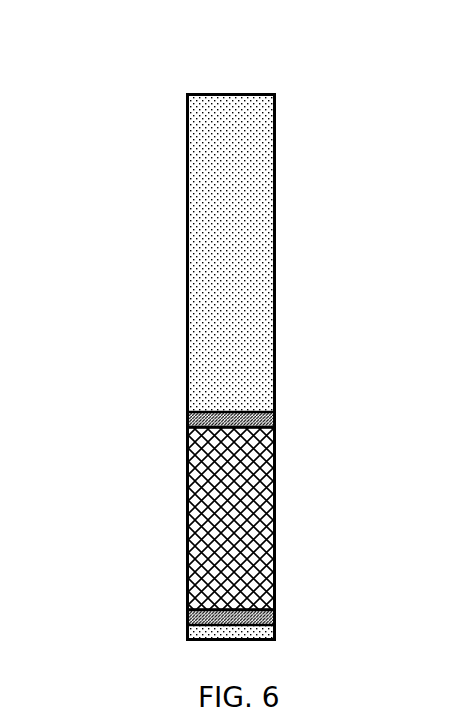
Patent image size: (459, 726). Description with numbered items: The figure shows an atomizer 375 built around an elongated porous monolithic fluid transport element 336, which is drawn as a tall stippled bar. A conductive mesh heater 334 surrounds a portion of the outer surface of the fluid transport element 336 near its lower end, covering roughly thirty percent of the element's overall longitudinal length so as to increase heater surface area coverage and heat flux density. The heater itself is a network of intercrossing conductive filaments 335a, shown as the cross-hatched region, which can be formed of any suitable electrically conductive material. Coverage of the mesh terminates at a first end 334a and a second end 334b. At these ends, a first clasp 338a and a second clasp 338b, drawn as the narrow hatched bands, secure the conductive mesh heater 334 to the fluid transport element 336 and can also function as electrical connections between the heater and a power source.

The atomizer 375 is at (118, 46).
The fluid transport element 336 is at (186, 213).
The conductive mesh heater 334 is at (182, 437).
The first clasp 338a is at (277, 418).
The first end of the conductive mesh heater 334a is at (283, 437).
The conductive filaments 335a is at (205, 553).
The second end of the conductive mesh heater 334b is at (283, 598).
The second clasp 338b is at (277, 617).